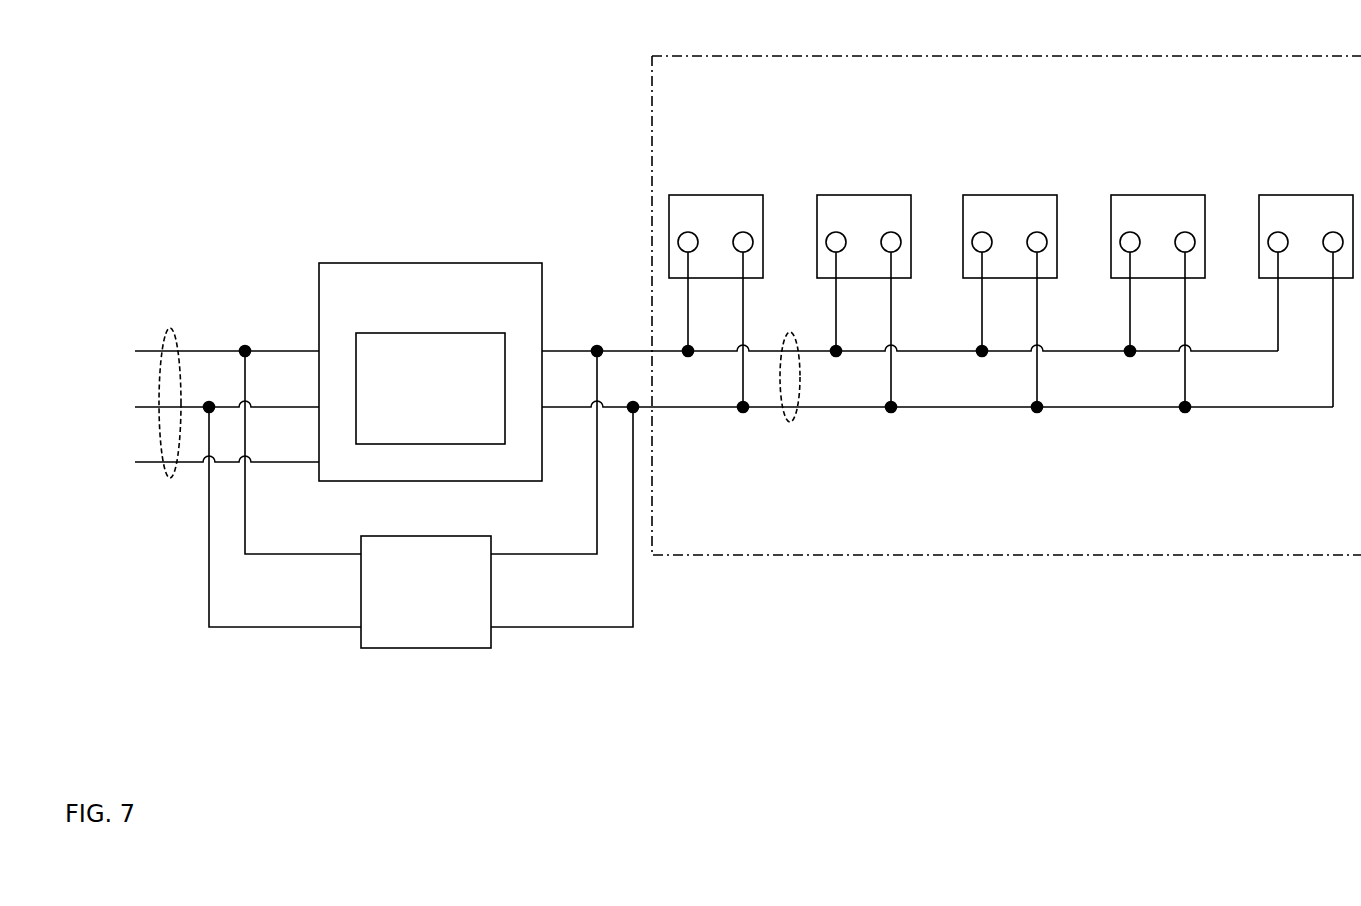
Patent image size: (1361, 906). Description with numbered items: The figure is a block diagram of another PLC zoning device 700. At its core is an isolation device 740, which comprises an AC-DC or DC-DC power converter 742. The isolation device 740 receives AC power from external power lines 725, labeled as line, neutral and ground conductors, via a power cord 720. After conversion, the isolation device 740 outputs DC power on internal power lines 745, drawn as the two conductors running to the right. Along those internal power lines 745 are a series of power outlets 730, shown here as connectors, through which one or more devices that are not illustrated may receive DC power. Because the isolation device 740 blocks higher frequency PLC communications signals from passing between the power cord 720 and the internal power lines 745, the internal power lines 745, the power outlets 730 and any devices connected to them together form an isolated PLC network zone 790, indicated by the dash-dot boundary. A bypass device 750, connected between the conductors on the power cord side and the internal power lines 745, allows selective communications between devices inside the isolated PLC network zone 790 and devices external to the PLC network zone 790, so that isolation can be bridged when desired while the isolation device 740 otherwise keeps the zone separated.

The PLC zoning device 700 is at (150, 88).
The power cord 720 is at (168, 330).
The external power lines 725 is at (100, 333).
The power outlets 730 is at (1018, 195).
The isolation device 740 is at (430, 372).
The power converter 742 is at (430, 388).
The internal power lines 745 is at (787, 422).
The bypass device 750 is at (421, 497).
The PLC network zone 790 is at (951, 305).